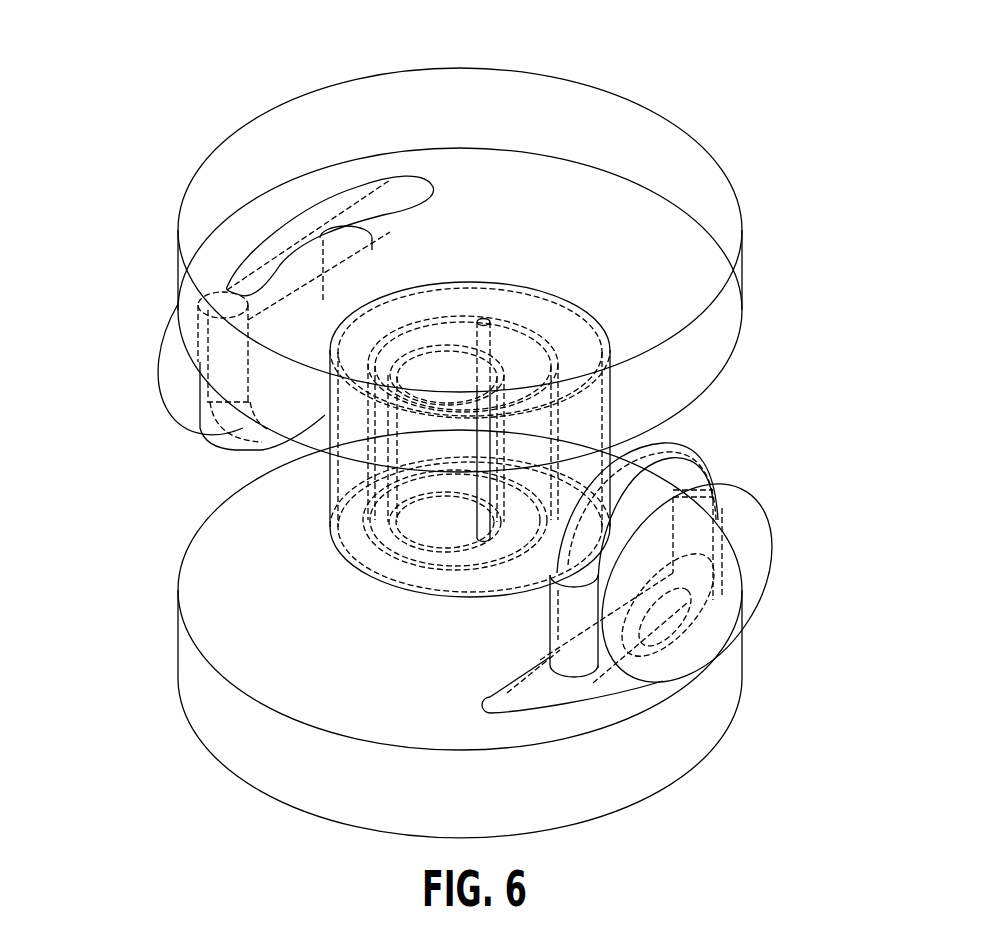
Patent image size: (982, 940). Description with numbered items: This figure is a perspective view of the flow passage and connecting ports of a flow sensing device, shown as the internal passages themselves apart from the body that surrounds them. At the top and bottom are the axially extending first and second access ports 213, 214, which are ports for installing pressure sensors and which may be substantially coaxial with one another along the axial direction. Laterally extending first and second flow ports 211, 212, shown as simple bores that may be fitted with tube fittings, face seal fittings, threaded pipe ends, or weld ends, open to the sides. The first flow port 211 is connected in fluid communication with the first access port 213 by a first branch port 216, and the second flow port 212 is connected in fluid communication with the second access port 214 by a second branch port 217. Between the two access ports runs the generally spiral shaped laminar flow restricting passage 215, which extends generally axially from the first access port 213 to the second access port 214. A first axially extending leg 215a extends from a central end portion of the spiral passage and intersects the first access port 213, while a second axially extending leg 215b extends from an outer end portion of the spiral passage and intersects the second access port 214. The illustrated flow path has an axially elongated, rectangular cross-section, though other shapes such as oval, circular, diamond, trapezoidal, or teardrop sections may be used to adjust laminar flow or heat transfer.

The first flow port 211 is at (745, 542).
The second flow port 212 is at (176, 380).
The first access port 213 is at (662, 757).
The second access port 214 is at (611, 111).
The restricting passage 215 is at (390, 492).
The first axially extending leg 215a is at (477, 512).
The second axially extending leg 215b is at (337, 475).
The first branch port 216 is at (680, 467).
The second branch port 217 is at (224, 357).